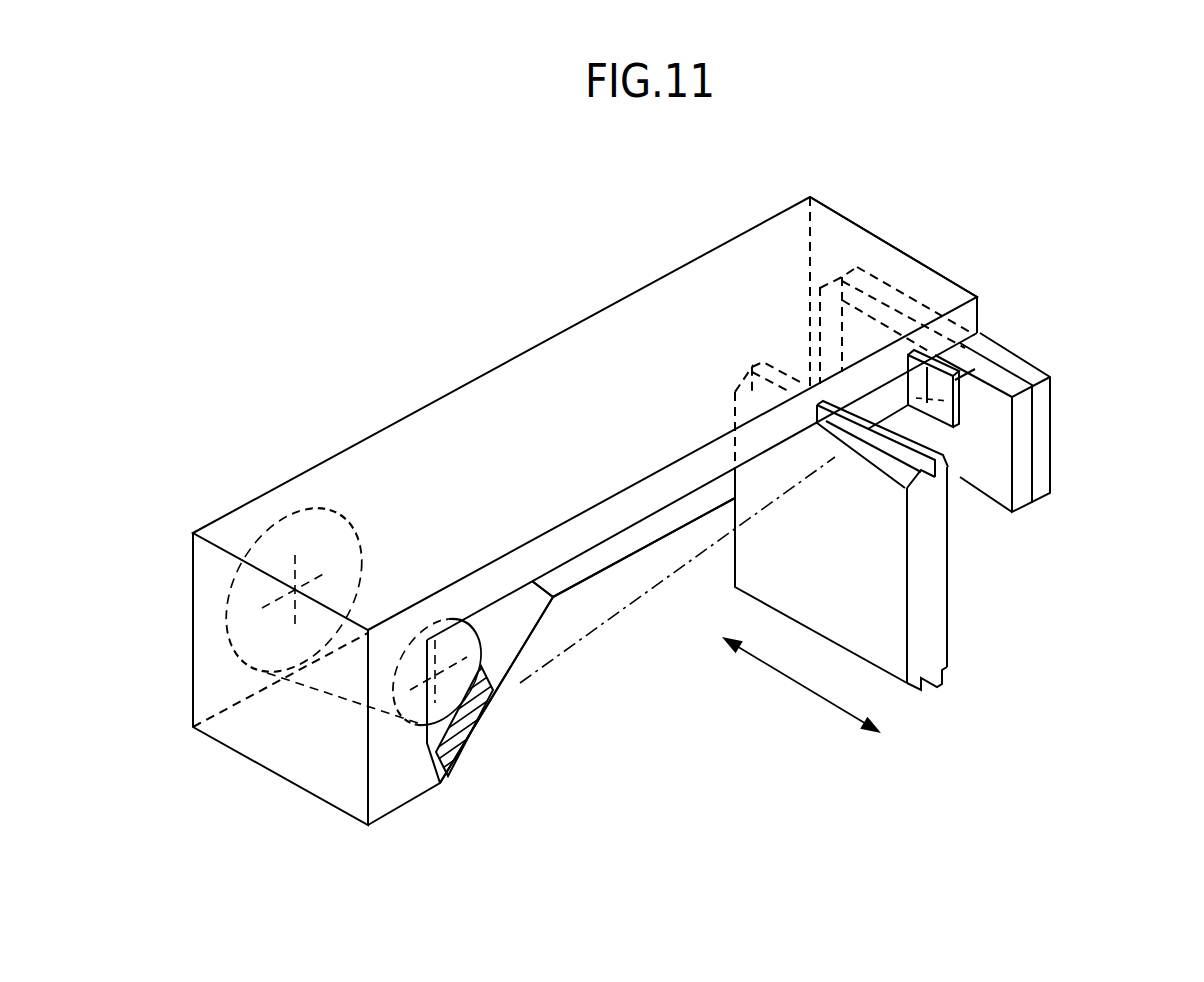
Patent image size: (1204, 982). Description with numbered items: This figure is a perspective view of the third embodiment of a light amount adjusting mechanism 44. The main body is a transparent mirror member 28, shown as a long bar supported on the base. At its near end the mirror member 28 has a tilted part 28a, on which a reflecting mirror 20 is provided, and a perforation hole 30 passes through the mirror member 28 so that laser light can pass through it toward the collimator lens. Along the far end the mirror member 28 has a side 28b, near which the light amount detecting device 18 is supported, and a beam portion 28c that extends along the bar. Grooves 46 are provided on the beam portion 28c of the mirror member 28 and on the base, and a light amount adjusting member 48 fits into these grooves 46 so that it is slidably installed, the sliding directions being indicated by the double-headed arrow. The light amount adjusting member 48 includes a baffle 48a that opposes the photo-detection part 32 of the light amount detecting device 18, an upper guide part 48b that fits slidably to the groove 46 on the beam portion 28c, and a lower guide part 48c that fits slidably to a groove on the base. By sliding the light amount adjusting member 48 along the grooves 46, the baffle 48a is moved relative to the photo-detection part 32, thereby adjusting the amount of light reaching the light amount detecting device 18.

The light amount adjusting mechanism 44 is at (302, 217).
The mirror member 28 is at (602, 284).
The tilted part 28a is at (514, 635).
The side 28b is at (936, 270).
The beam portion 28c is at (618, 523).
The perforation hole 30 is at (340, 697).
The reflecting mirror 20 is at (477, 727).
The grooves 46 is at (887, 420).
The light amount adjusting member 48 is at (977, 542).
The baffle 48a is at (884, 645).
The upper guide part 48b is at (950, 553).
The lower guide part 48c is at (937, 690).
The light amount detecting device 18 is at (1043, 442).
The photo-detection part 32 is at (960, 433).